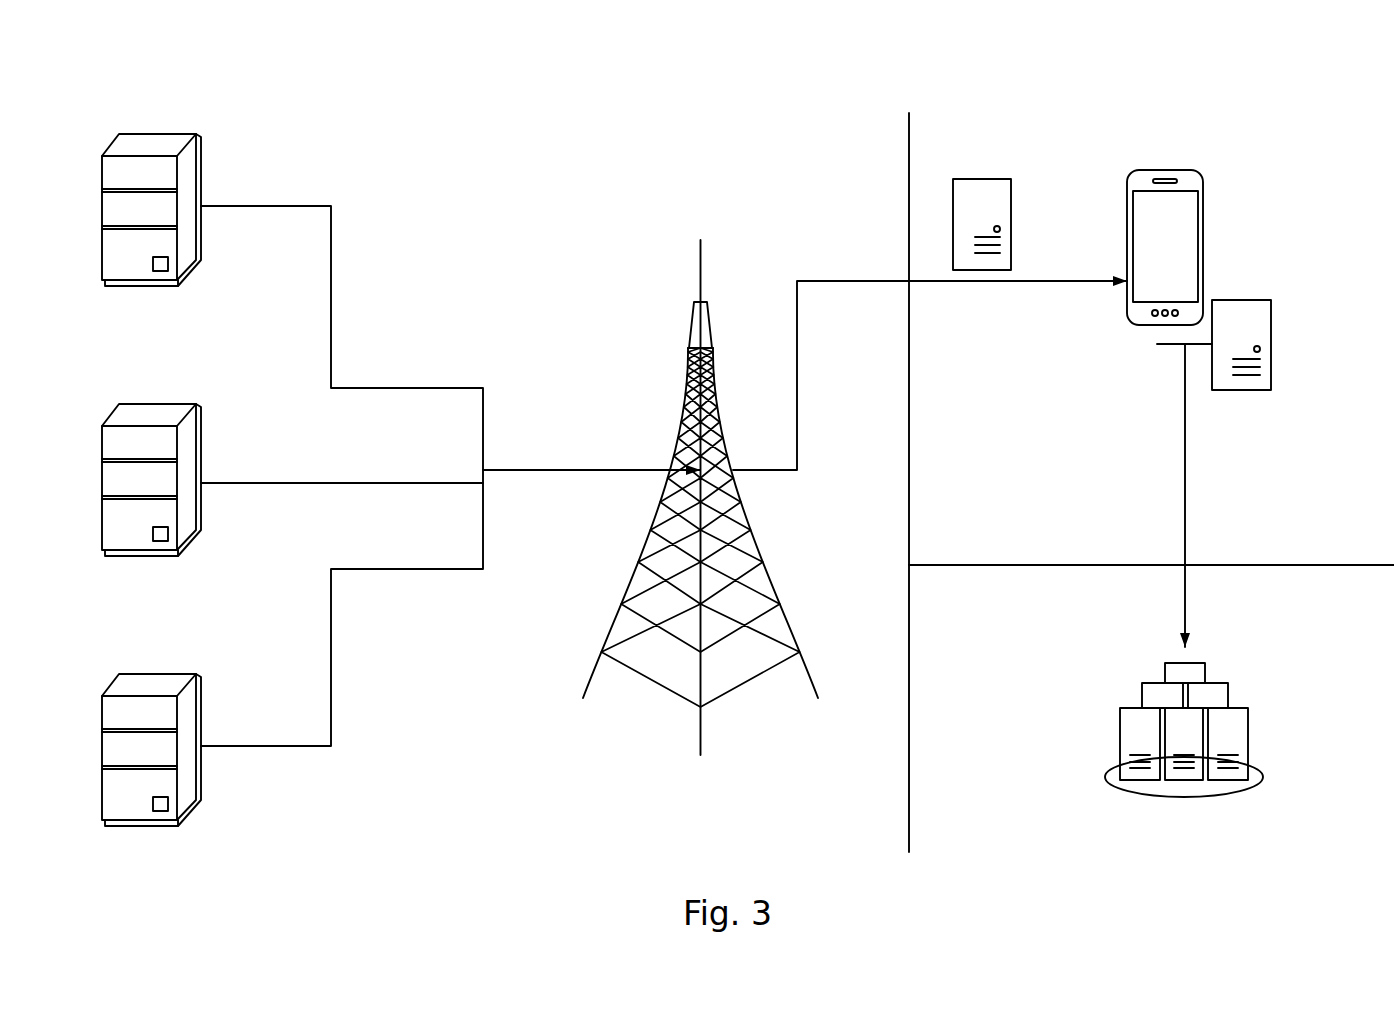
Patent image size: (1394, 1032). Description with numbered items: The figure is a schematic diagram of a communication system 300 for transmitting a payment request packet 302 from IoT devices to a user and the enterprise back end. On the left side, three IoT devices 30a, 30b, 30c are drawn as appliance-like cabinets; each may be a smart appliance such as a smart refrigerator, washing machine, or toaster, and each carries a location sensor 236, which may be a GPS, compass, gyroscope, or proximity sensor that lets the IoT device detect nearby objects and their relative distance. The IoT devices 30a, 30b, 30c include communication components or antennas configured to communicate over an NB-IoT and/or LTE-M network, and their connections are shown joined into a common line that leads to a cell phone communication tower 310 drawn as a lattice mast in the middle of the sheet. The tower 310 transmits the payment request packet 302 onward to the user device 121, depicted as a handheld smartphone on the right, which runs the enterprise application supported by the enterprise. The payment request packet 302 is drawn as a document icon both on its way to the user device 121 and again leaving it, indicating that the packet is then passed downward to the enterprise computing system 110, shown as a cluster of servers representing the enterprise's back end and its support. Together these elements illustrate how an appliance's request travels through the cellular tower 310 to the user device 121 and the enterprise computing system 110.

The communication system 300 is at (1080, 60).
The IoT device 30a is at (151, 225).
The IoT device 30b is at (151, 495).
The IoT device 30c is at (151, 765).
The location sensor 236 is at (168, 263).
The cell phone communication tower 310 is at (701, 738).
The payment request packet 302 is at (1011, 190).
The user device 121 is at (1156, 170).
The enterprise computing system 110 is at (1237, 793).